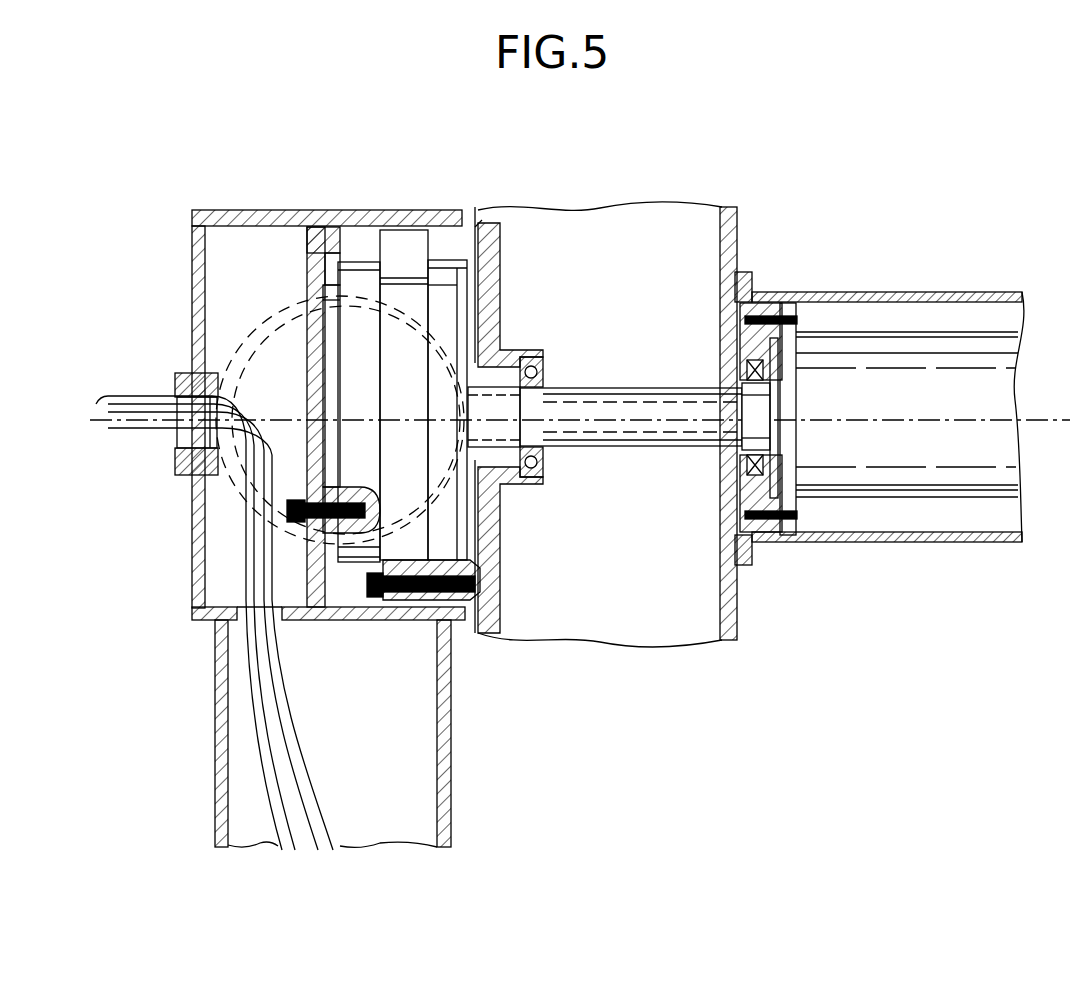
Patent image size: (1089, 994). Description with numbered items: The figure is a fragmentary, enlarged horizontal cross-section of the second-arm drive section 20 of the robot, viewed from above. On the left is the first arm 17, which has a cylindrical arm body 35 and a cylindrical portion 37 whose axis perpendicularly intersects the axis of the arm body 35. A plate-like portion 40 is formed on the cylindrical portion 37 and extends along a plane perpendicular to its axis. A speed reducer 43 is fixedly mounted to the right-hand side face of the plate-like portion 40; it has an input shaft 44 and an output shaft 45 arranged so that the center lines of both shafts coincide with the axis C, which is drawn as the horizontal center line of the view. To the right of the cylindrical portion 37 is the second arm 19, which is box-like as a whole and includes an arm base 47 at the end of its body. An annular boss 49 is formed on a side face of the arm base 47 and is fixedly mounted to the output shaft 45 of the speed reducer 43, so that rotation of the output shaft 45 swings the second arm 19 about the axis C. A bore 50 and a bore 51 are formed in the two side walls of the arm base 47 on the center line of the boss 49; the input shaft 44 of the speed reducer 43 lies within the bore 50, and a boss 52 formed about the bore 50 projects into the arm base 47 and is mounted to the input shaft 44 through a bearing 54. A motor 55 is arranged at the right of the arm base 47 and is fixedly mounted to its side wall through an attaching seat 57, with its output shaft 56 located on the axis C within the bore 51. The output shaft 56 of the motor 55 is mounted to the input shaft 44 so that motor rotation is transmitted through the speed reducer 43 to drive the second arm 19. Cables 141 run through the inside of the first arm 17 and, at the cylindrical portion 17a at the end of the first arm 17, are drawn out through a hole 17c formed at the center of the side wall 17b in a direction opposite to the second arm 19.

The axis C is at (100, 408).
The first arm 17 is at (215, 733).
The cylindrical portion 17a is at (283, 210).
The side wall 17b is at (192, 567).
The hole 17c is at (180, 444).
The cables 141 is at (290, 735).
The arm body 35 is at (278, 302).
The cylindrical portion 37 is at (350, 614).
The plate-like portion 40 is at (318, 582).
The speed reducer 43 is at (357, 245).
The output shaft 45 is at (400, 240).
The annular boss 49 is at (452, 255).
The input shaft 44 is at (492, 410).
The bore 50 is at (508, 462).
The boss 52 is at (540, 360).
The bearing 54 is at (545, 458).
The output shaft 56 is at (650, 400).
The attaching seat 57 is at (735, 340).
The bore 51 is at (722, 462).
The arm base 47 is at (731, 233).
The second arm 19 is at (742, 625).
The second-arm drive section 20 is at (826, 210).
The motor 55 is at (908, 340).